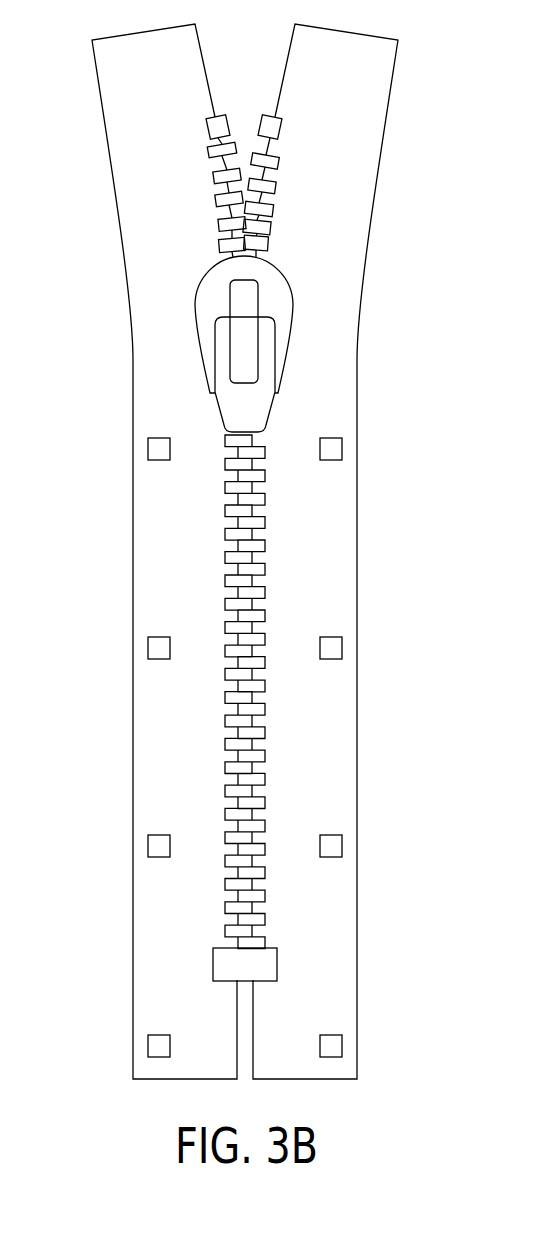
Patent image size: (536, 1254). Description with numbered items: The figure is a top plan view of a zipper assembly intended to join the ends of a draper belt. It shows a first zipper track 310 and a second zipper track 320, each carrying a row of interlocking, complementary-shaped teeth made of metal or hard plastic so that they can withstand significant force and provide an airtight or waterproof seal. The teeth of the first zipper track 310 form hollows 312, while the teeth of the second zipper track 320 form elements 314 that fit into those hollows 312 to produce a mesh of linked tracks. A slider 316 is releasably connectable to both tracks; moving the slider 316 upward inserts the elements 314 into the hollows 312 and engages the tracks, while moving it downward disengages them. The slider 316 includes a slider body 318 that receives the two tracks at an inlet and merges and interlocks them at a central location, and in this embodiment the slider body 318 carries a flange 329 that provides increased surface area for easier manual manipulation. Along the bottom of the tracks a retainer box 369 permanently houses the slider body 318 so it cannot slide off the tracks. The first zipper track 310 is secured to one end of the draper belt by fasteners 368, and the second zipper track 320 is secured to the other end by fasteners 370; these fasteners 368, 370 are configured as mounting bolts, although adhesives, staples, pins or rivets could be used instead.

The first zipper track 310 is at (295, 127).
The second zipper track 320 is at (195, 127).
The hollows 312 is at (260, 233).
The elements 314 is at (218, 200).
The slider 316 is at (280, 291).
The slider body 318 is at (197, 330).
The flange 329 is at (287, 345).
The fastener 368 is at (330, 451).
The fastener 370 is at (160, 451).
The retainer box 369 is at (260, 965).